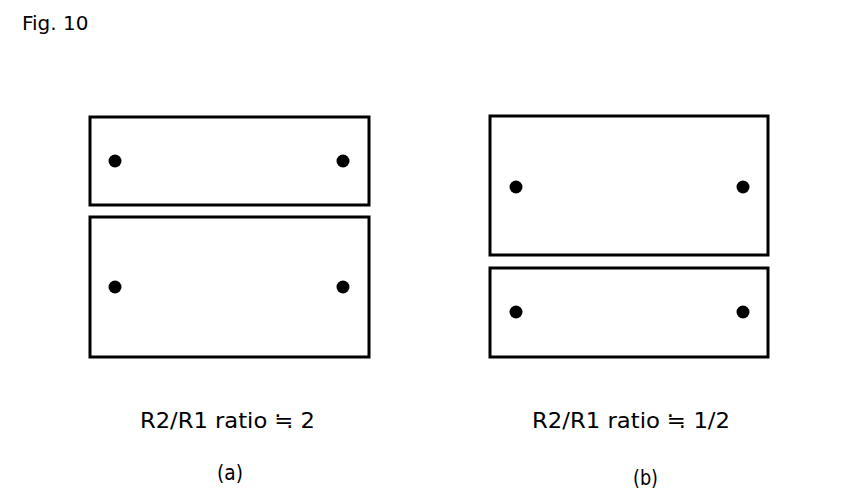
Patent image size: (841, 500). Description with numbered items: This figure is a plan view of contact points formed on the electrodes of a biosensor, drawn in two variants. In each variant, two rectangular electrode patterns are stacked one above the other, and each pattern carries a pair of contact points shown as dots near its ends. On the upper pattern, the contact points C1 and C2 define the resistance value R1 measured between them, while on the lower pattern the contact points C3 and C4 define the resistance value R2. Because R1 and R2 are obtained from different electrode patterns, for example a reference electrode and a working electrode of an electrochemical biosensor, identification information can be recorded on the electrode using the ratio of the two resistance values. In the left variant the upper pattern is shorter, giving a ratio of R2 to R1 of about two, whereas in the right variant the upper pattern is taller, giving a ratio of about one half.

The resistance value between contact points C1 and C2 R1 is at (431, 185).
The resistance value between contact points C3 and C4 R2 is at (431, 287).
The contact point C1 is at (313, 140).
The contact point C2 is at (542, 140).
The contact point C3 is at (314, 337).
The contact point C4 is at (544, 337).